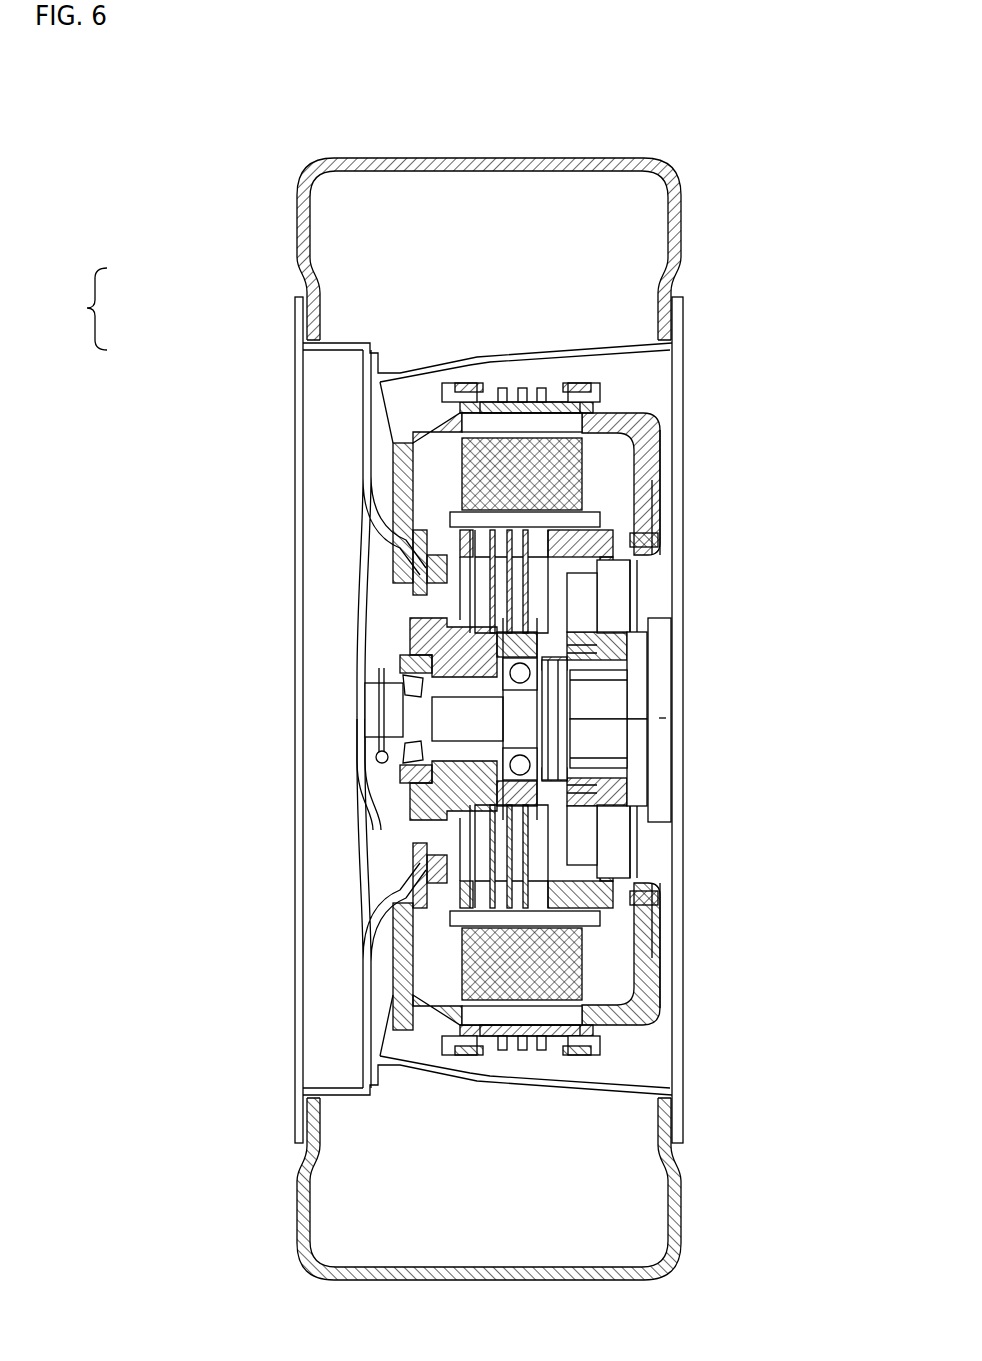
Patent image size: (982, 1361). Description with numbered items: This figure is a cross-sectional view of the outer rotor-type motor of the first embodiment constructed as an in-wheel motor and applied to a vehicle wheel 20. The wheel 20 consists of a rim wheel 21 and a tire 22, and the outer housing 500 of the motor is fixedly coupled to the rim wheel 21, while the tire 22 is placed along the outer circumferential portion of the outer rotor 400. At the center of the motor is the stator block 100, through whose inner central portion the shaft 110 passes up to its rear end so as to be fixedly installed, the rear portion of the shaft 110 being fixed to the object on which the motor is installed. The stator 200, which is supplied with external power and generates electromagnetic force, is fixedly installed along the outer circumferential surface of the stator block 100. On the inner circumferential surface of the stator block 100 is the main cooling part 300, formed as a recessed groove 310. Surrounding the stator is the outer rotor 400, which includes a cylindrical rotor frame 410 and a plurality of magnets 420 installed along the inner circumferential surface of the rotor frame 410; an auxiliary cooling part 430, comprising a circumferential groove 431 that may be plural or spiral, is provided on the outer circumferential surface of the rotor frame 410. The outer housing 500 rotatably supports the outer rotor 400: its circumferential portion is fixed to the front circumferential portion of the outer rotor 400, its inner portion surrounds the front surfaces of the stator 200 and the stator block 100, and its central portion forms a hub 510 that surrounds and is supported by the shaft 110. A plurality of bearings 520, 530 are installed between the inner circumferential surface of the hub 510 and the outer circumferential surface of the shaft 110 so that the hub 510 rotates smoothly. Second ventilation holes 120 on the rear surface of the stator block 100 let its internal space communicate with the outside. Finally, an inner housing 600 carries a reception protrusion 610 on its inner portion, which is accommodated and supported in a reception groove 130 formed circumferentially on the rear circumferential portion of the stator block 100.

The wheel 20 is at (79, 309).
The rim wheel 21 is at (357, 487).
The tire 22 is at (297, 213).
The stator block 100 is at (625, 651).
The shaft 110 is at (447, 738).
The second ventilation holes 120 is at (583, 609).
The reception groove 130 is at (650, 533).
The stator 200 is at (598, 445).
The main cooling part 300 is at (470, 567).
The groove 310 is at (560, 652).
The outer rotor 400 is at (613, 237).
The rotor frame 410 is at (466, 387).
The magnets 420 is at (577, 393).
The auxiliary cooling part 430 is at (527, 373).
The groove 431 is at (513, 387).
The outer housing 500 is at (378, 452).
The hub 510 is at (480, 803).
The bearing 520 is at (373, 757).
The bearing 530 is at (528, 773).
The inner housing 600 is at (678, 968).
The reception protrusion 610 is at (643, 488).